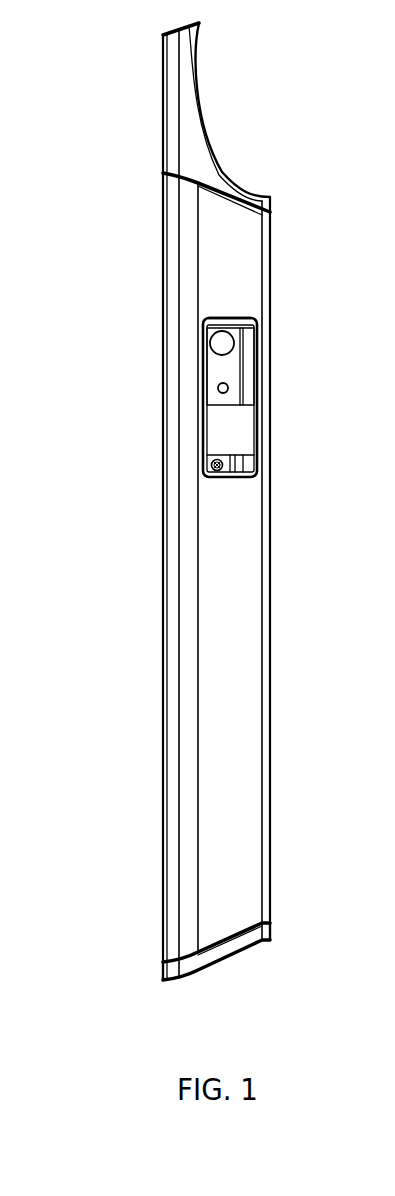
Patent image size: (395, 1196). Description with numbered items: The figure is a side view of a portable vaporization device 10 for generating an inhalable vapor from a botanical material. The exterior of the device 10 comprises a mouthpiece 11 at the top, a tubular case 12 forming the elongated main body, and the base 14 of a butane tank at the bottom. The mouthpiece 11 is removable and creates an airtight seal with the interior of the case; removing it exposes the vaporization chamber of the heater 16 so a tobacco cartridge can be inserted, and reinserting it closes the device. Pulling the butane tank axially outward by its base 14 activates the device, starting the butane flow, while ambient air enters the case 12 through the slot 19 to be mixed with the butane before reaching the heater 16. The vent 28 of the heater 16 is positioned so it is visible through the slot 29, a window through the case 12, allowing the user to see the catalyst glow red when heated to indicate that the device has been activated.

The device 10 is at (185, 501).
The mouthpiece 11 is at (212, 137).
The tubular case 12 is at (163, 642).
The base of butane tank 14 is at (163, 973).
The heater 16 is at (208, 402).
The slot 19 is at (218, 477).
The vent 28 is at (220, 347).
The slot 29 is at (222, 318).